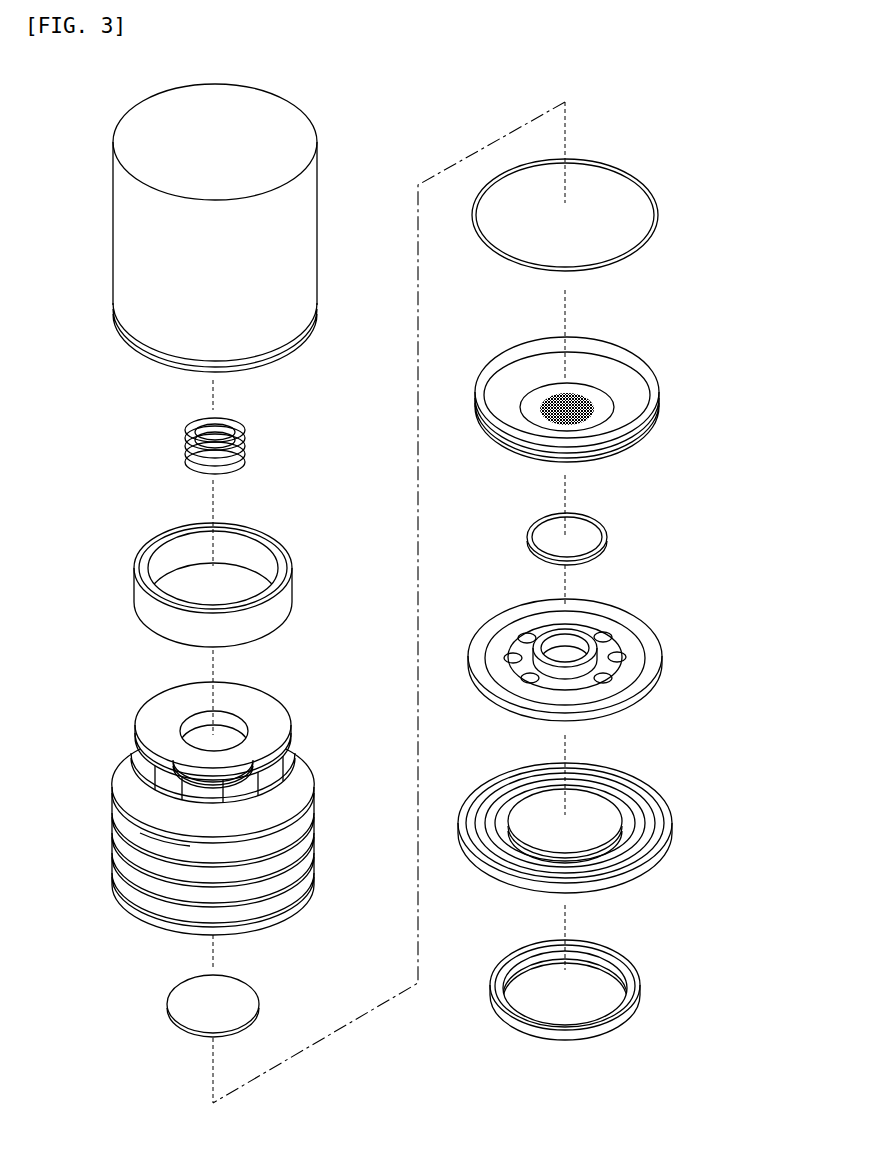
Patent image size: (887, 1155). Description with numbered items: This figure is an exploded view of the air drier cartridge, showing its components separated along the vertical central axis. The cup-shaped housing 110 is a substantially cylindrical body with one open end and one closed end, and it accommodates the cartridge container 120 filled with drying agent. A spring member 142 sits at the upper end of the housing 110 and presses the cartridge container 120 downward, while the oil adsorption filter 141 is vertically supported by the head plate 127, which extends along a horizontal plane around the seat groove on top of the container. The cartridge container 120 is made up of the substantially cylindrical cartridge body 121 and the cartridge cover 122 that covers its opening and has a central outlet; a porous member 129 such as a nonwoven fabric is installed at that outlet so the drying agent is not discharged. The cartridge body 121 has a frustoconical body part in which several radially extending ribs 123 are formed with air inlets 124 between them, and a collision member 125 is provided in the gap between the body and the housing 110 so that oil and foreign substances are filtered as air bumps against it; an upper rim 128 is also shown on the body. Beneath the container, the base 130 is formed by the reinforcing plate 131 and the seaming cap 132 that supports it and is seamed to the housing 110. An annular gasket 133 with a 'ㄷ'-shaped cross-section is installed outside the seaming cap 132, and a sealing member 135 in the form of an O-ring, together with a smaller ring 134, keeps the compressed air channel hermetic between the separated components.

The housing 110 is at (125, 255).
The cartridge container 120 is at (108, 728).
The cartridge body 121 is at (288, 828).
The cartridge cover 122 is at (660, 373).
The ribs 123 is at (268, 770).
The air inlets 124 is at (150, 780).
The collision member 125 is at (115, 830).
The head plate 127 is at (278, 720).
The upper rim 128 is at (287, 785).
The porous member 129 is at (168, 1005).
The base 130 is at (612, 746).
The reinforcing plate 131 is at (645, 685).
The seaming cap 132 is at (660, 800).
The gasket 133 is at (638, 975).
The small ring 134 is at (606, 533).
The sealing member 135 is at (660, 215).
The oil adsorption filter 141 is at (138, 598).
The spring member 142 is at (185, 440).